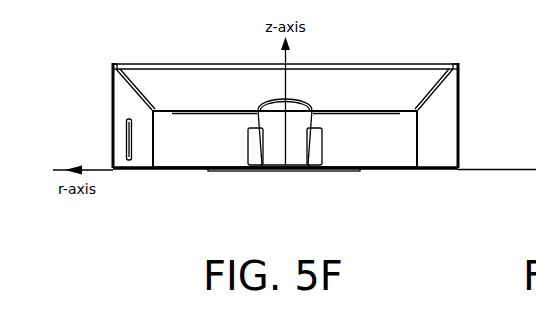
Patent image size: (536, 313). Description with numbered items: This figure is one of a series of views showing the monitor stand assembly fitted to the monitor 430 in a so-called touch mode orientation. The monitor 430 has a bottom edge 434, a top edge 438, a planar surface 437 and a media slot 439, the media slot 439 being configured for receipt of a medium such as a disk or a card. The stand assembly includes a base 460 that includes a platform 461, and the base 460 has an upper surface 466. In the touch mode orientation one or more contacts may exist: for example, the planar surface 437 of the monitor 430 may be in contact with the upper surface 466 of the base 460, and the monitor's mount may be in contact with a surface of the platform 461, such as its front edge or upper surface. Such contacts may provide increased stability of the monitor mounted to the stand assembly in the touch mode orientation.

The monitor 430 is at (110, 67).
The bottom edge 434 is at (434, 170).
The planar surface 437 is at (373, 144).
The top edge 438 is at (434, 63).
The media slot 439 is at (128, 142).
The base 460 is at (295, 142).
The platform 461 is at (347, 168).
The upper surface 466 is at (312, 110).